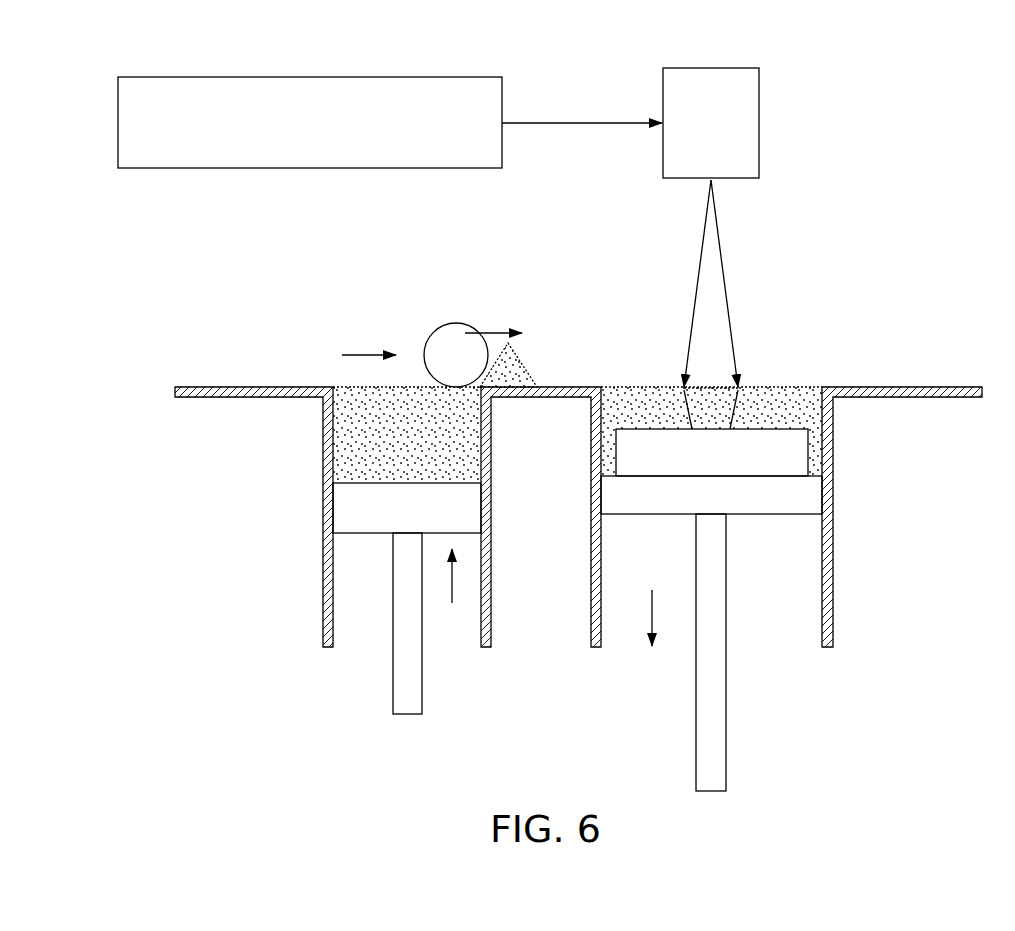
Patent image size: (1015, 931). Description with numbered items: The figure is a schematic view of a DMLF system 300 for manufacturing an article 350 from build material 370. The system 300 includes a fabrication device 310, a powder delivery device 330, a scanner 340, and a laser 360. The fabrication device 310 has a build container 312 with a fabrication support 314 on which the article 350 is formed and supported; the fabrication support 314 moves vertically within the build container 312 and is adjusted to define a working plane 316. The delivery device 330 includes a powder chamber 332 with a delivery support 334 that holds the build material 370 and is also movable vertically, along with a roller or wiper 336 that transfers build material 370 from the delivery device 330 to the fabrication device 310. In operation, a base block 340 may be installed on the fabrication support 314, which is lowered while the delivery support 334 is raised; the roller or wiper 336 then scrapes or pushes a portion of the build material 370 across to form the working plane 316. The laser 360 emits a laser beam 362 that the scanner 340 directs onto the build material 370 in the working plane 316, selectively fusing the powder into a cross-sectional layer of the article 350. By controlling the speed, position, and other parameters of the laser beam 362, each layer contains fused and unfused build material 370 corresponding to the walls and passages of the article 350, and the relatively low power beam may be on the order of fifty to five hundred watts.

The DMLF system 300 is at (551, 397).
The fabrication device 310 is at (792, 562).
The build container 312 is at (831, 413).
The fabrication support 314 is at (775, 515).
The working plane 316 is at (803, 393).
The powder delivery device 330 is at (362, 491).
The powder chamber 332 is at (323, 447).
The delivery support 334 is at (343, 504).
The roller or wiper 336 is at (456, 322).
The scanner 340 is at (712, 68).
The article 350 is at (666, 347).
The laser 360 is at (318, 77).
The laser beam 362 is at (586, 121).
The build material 370 is at (343, 426).